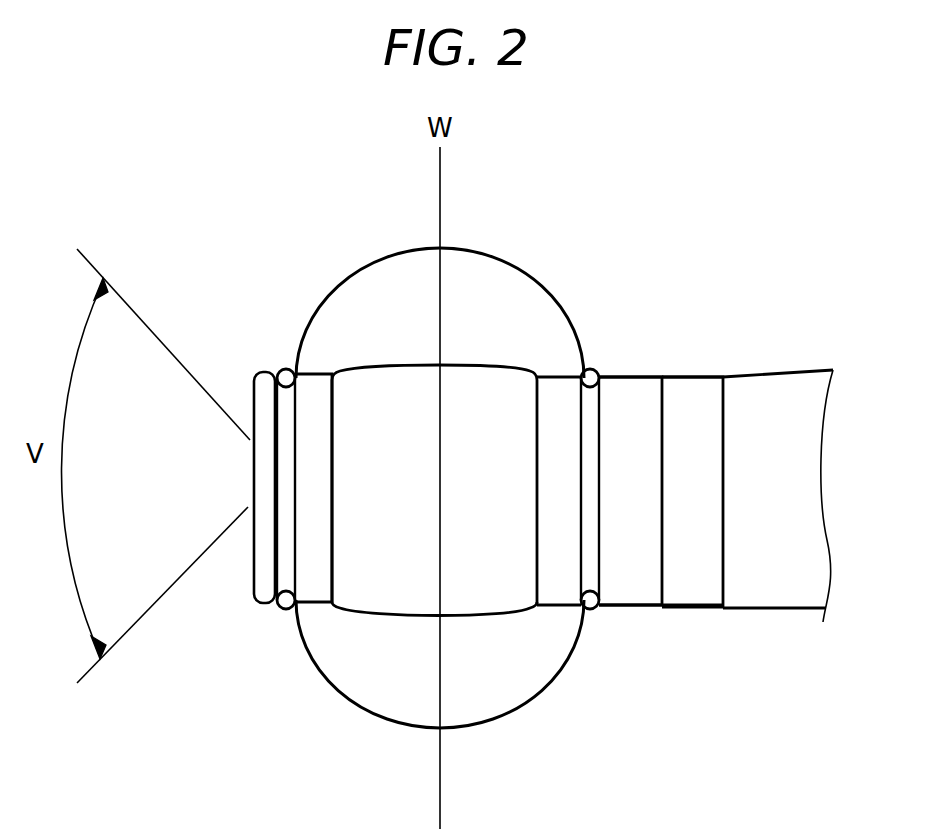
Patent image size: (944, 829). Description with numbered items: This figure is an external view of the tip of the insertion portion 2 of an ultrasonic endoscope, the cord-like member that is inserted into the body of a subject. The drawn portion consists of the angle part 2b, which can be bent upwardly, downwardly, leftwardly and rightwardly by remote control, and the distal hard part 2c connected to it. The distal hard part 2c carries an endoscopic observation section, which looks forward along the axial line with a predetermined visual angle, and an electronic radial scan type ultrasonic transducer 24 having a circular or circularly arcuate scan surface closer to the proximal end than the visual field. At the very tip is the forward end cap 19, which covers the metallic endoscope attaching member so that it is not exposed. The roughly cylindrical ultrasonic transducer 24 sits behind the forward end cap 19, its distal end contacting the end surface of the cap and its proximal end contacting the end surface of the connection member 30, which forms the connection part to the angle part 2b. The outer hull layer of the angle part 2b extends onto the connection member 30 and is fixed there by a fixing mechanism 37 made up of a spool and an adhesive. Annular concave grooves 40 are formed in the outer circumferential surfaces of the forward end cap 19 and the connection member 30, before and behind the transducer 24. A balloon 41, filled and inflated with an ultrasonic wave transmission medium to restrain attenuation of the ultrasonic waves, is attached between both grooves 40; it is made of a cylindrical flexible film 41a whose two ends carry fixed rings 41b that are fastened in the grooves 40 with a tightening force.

The insertion portion 2 is at (752, 355).
The angle part 2b is at (794, 593).
The distal hard part 2c is at (467, 359).
The forward end cap 19 is at (258, 373).
The ultrasonic transducer 24 is at (457, 620).
The connection member 30 is at (637, 378).
The fixing mechanism 37 is at (703, 593).
The annular concave groove 40 is at (277, 553).
The balloon 41 is at (336, 687).
The flexible film 41a is at (556, 670).
The fixed ring 41b is at (286, 369).